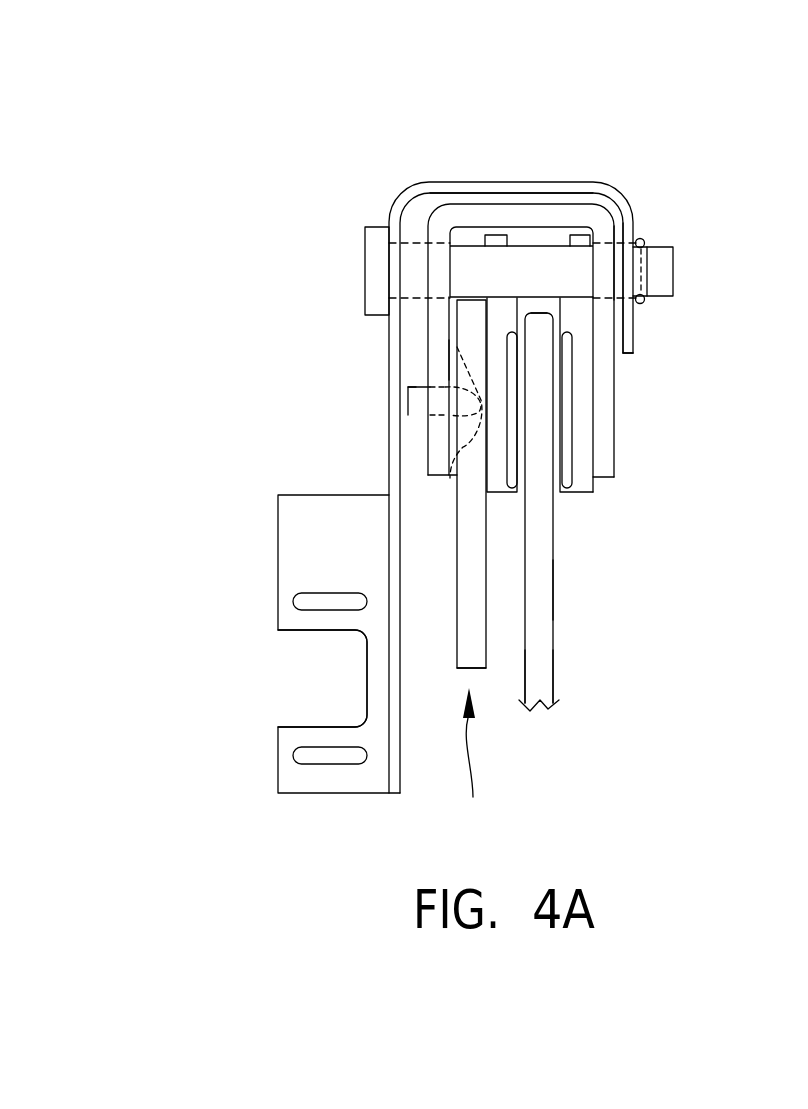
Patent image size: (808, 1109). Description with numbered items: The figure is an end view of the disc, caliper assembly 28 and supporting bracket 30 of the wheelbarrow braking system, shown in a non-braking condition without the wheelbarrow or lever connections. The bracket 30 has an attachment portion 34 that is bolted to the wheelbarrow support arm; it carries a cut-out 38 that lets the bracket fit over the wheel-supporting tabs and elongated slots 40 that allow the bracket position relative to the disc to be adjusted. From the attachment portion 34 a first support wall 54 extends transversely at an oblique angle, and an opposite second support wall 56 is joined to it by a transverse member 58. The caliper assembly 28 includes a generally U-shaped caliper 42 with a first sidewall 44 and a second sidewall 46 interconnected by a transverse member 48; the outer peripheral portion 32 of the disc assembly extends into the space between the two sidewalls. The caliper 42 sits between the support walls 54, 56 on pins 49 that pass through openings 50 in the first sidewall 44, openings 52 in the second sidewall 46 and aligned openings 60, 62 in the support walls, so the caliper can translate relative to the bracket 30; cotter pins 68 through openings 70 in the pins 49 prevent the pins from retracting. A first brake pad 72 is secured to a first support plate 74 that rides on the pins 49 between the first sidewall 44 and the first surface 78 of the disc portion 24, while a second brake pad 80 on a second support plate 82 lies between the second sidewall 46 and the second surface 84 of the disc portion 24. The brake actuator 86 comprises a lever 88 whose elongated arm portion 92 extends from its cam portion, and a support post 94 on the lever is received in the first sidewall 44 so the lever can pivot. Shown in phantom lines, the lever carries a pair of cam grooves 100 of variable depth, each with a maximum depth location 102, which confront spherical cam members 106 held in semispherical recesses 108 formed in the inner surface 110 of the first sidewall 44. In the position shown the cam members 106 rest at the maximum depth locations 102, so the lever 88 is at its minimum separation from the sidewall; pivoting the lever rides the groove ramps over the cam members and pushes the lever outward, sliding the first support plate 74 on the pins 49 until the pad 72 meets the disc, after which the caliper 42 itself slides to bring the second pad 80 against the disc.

The disc portion 24 is at (538, 690).
The caliper assembly 28 is at (645, 478).
The bracket 30 is at (428, 184).
The outer peripheral portion 32 is at (493, 242).
The attachment portion 34 is at (295, 512).
The cut-out 38 is at (328, 632).
The elongated slots 40 is at (313, 592).
The caliper 42 is at (542, 215).
The first sidewall 44 is at (438, 312).
The second sidewall 46 is at (605, 440).
The transverse member 48 is at (572, 213).
The pins 49 is at (662, 283).
The openings 50 is at (399, 241).
The openings 52 is at (608, 243).
The first support wall 54 is at (395, 310).
The second support wall 56 is at (631, 354).
The transverse member 58 is at (515, 188).
The openings 60 is at (427, 245).
The openings 62 is at (630, 243).
The cotter pins 68 is at (643, 240).
The openings 70 is at (647, 260).
The first brake pad 72 is at (513, 492).
The first support plate 74 is at (540, 327).
The first surface 78 is at (525, 570).
The second brake pad 80 is at (566, 492).
The second support plate 82 is at (580, 492).
The second surface 84 is at (553, 588).
The brake actuator 86 is at (470, 761).
The lever 88 is at (468, 570).
The elongated arm portion 92 is at (468, 635).
The support post 94 is at (416, 386).
The cam grooves 100 is at (460, 360).
The maximum depth location 102 is at (463, 447).
The spherical cam members 106 is at (450, 415).
The semispherical recesses 108 is at (447, 404).
The inner surface 110 is at (453, 477).